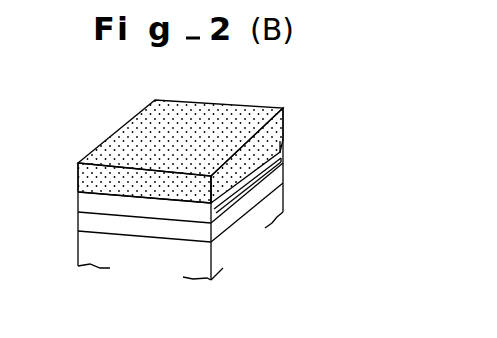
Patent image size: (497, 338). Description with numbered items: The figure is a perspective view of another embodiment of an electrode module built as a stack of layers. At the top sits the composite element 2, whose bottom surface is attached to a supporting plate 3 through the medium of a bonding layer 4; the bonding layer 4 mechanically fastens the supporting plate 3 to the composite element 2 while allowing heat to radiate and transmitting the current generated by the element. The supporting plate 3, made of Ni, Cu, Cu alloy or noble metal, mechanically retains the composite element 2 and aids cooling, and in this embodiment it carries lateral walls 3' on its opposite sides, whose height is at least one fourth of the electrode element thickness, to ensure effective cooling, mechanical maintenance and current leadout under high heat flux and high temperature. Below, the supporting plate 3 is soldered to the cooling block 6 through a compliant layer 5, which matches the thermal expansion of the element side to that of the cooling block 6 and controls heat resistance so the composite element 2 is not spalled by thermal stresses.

The composite element 2 is at (132, 129).
The supporting plate 3 is at (202, 195).
The lateral walls 3' is at (247, 233).
The bonding layer 4 is at (278, 170).
The compliant layer 5 is at (87, 222).
The cooling block 6 is at (83, 250).